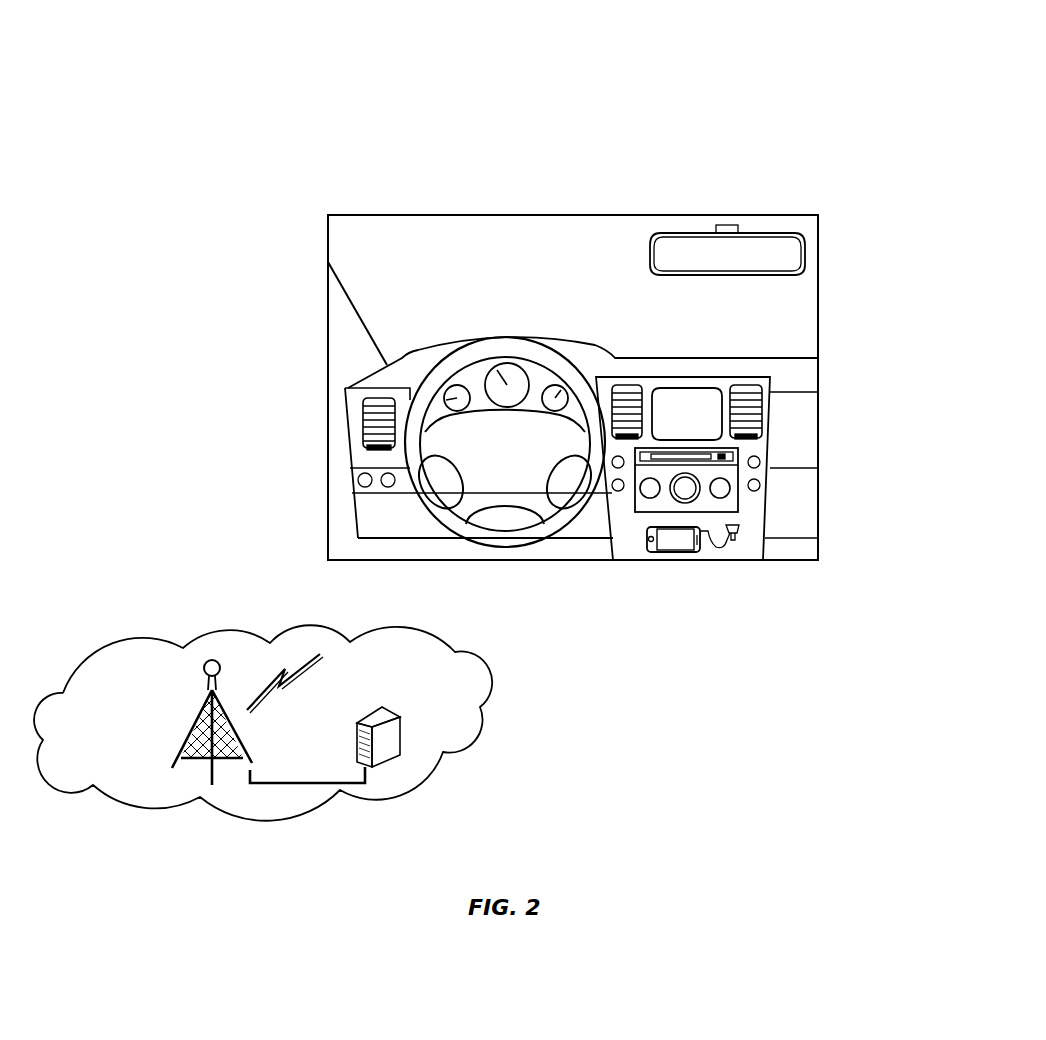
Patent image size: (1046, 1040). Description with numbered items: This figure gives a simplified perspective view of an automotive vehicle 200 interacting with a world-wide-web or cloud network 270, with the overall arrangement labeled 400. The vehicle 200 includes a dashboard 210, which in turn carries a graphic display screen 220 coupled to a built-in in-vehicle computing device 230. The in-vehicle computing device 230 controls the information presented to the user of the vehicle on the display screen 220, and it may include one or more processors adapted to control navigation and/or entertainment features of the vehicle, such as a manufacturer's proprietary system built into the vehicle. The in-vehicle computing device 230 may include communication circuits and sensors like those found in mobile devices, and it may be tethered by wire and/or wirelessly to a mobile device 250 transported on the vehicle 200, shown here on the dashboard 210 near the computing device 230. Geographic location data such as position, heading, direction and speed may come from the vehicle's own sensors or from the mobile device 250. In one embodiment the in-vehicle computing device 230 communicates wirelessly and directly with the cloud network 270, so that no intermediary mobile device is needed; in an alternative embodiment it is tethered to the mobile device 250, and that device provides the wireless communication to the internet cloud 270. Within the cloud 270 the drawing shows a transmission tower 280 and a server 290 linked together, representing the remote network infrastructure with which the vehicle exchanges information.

The vehicle environment / system 400 is at (708, 57).
The automotive vehicle 200 is at (838, 250).
The dashboard 210 is at (740, 377).
The graphic display screen 220 is at (702, 419).
The in-vehicle computing device 230 is at (741, 497).
The mobile device 250 is at (704, 548).
The world-wide-web or cloud network 270 is at (110, 643).
The cellular tower 280 is at (173, 753).
The server 290 is at (400, 732).